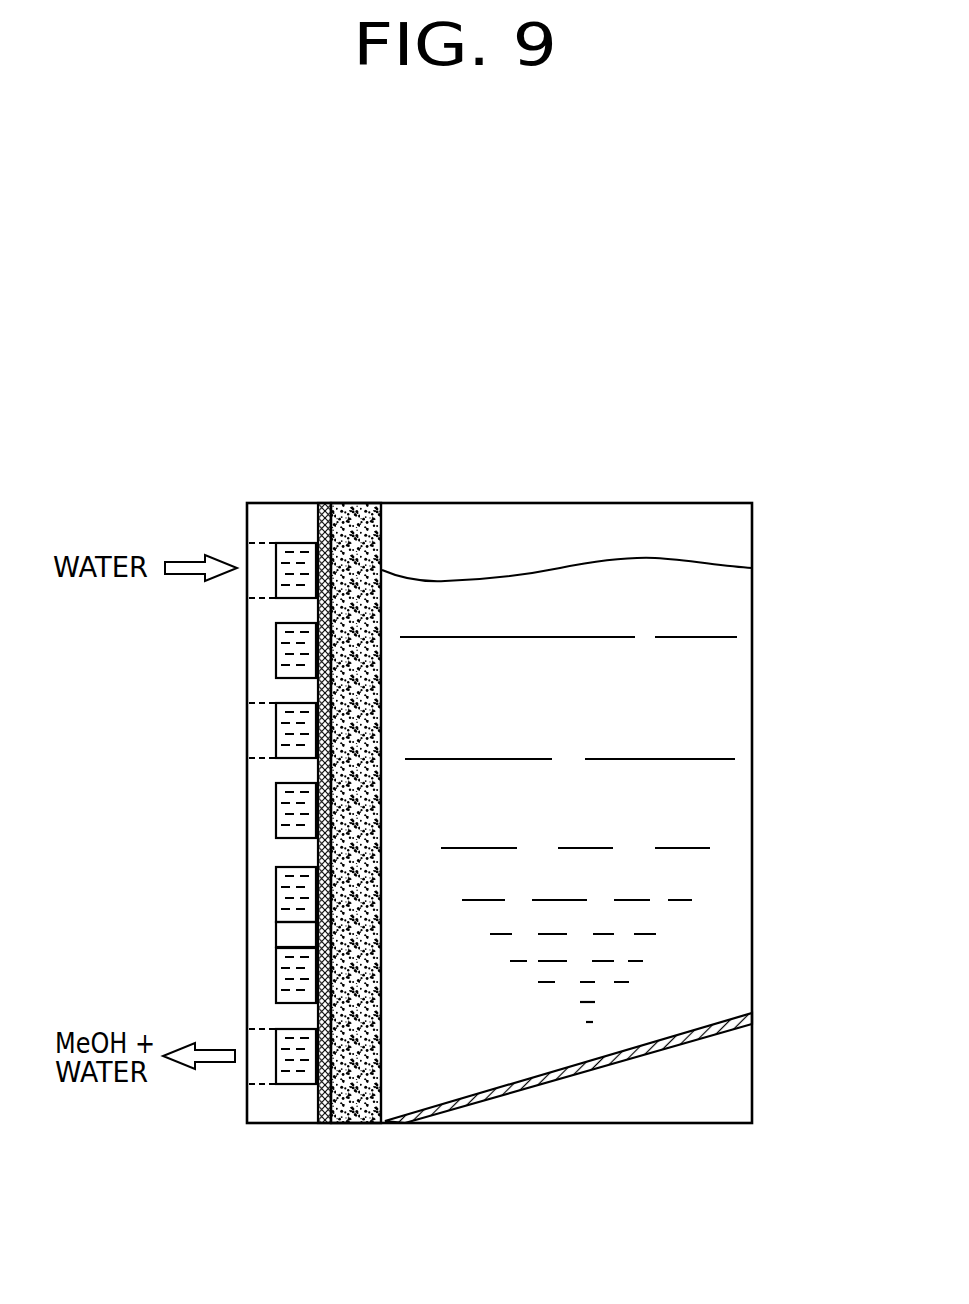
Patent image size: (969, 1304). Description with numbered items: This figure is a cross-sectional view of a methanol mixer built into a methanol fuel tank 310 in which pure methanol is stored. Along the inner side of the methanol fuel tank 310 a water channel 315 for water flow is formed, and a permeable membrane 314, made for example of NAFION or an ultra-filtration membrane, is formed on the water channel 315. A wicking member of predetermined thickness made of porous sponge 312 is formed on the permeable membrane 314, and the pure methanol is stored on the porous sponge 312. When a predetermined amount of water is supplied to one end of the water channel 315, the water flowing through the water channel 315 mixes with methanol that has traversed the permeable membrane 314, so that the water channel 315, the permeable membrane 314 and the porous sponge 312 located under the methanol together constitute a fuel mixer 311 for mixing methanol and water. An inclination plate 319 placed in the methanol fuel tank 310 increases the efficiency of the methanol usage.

The methanol fuel tank 310 is at (752, 718).
The fuel mixer 311 is at (342, 884).
The porous sponge 312 is at (383, 856).
The permeable membrane 314 is at (328, 1118).
The water channel 315 is at (285, 1060).
The inclination plate 319 is at (708, 1038).